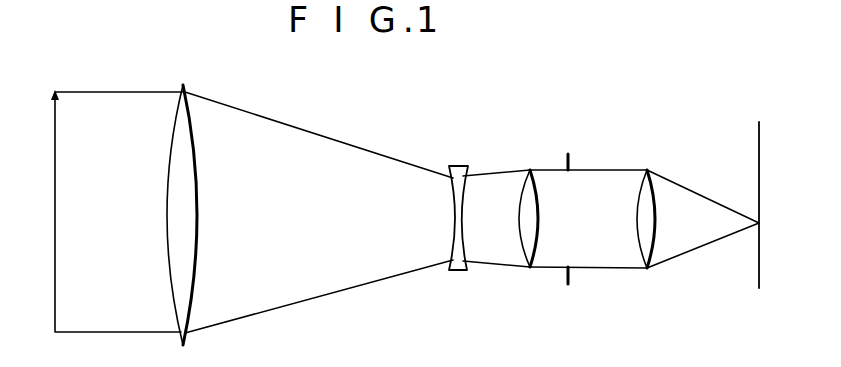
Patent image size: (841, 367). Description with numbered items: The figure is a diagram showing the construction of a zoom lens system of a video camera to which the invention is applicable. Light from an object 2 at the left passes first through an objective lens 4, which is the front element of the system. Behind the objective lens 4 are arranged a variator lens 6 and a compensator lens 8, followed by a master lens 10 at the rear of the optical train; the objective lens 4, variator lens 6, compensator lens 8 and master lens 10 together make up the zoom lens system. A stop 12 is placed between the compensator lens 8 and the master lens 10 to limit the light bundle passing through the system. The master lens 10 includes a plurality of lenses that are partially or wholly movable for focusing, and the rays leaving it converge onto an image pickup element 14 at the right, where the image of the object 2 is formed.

The object 2 is at (57, 149).
The objective lens 4 is at (188, 88).
The variator lens 6 is at (455, 163).
The compensator lens 8 is at (530, 167).
The master lens 10 is at (648, 167).
The stop 12 is at (568, 158).
The image pickup element 14 is at (760, 130).